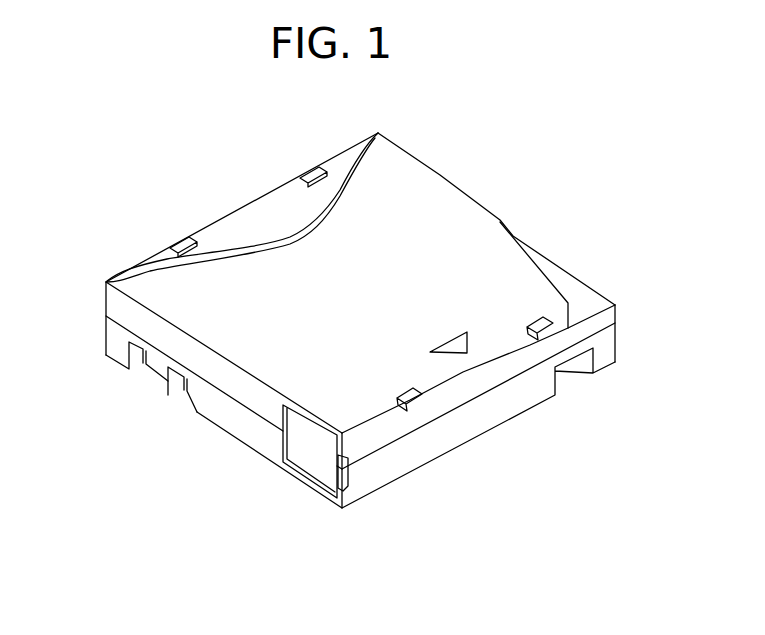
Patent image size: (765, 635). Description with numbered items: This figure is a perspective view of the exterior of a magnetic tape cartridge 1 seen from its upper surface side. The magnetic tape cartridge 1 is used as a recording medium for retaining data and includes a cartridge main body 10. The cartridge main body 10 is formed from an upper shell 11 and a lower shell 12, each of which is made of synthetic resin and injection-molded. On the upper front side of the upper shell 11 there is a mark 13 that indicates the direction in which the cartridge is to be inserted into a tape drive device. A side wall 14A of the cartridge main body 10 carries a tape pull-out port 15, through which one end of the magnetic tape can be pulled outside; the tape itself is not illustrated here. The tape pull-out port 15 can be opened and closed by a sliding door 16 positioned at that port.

The magnetic tape cartridge 1 is at (126, 140).
The cartridge main body 10 is at (471, 176).
The upper shell 11 is at (313, 257).
The lower shell 12 is at (191, 412).
The mark 13 is at (444, 338).
The side wall 14A is at (258, 433).
The tape pull-out port 15 is at (307, 483).
The sliding door 16 is at (317, 458).